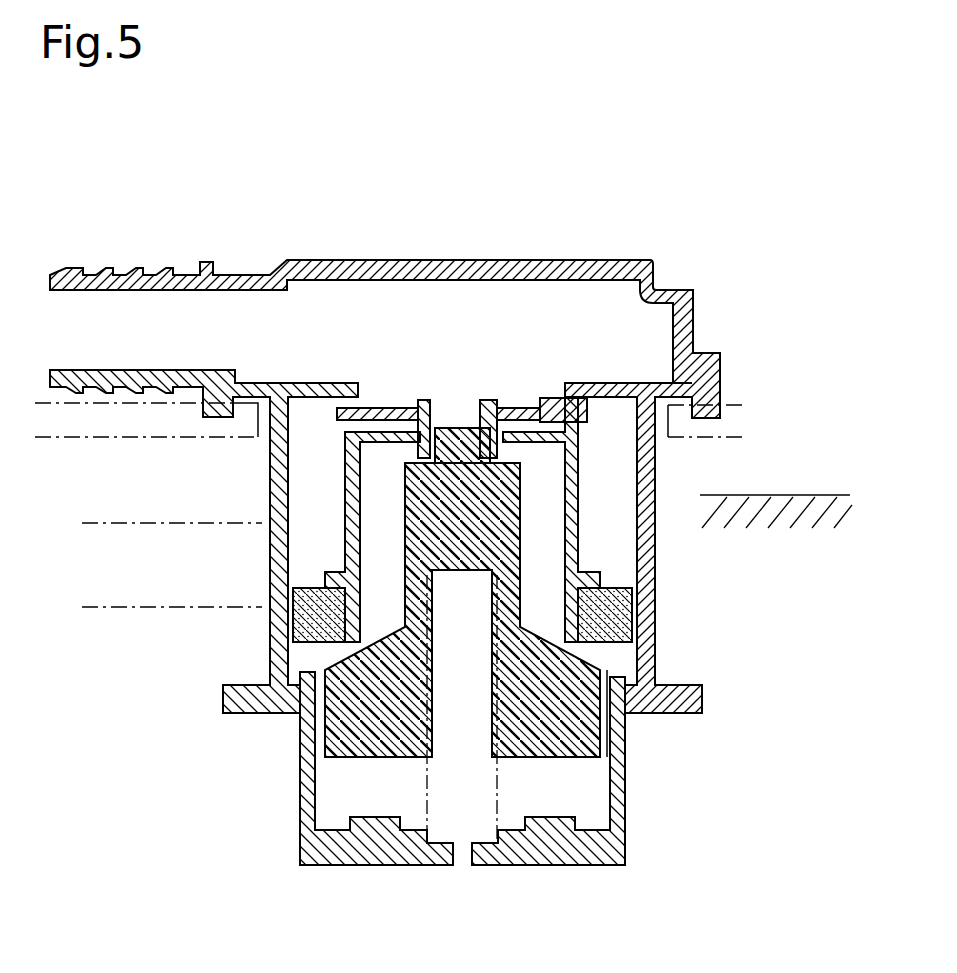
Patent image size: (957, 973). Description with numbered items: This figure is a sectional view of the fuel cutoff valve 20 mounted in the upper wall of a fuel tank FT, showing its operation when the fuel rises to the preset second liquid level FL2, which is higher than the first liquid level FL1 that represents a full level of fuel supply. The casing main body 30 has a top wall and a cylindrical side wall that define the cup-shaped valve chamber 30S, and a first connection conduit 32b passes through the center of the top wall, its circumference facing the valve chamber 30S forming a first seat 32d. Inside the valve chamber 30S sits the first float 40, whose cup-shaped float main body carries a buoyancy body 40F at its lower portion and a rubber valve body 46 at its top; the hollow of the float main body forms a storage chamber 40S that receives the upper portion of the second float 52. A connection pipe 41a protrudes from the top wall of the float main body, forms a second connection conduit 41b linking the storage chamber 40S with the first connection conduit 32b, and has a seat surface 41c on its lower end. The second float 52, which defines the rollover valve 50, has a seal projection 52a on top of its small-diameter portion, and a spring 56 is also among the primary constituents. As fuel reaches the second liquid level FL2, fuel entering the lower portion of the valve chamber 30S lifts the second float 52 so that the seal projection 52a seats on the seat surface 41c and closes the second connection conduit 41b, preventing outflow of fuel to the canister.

The fuel cutoff valve 20 is at (725, 202).
The casing main body 30 is at (650, 618).
The valve chamber 30S is at (623, 520).
The first connection conduit 32b is at (563, 397).
The first seat 32d is at (587, 398).
The first float 40 is at (350, 478).
The storage chamber 40S is at (405, 478).
The buoyancy body 40F is at (300, 615).
The connection pipe 41a is at (426, 398).
The second connection conduit 41b is at (486, 398).
The seat surface 41c is at (488, 452).
The rubber valve body 46 is at (378, 408).
The rollover valve 50 is at (307, 657).
The second float 52 is at (357, 737).
The seal projection 52a is at (462, 428).
The spring 56 is at (432, 780).
The fuel tank FT is at (722, 405).
The first liquid level FL1 is at (118, 609).
The second liquid level FL2 is at (118, 527).